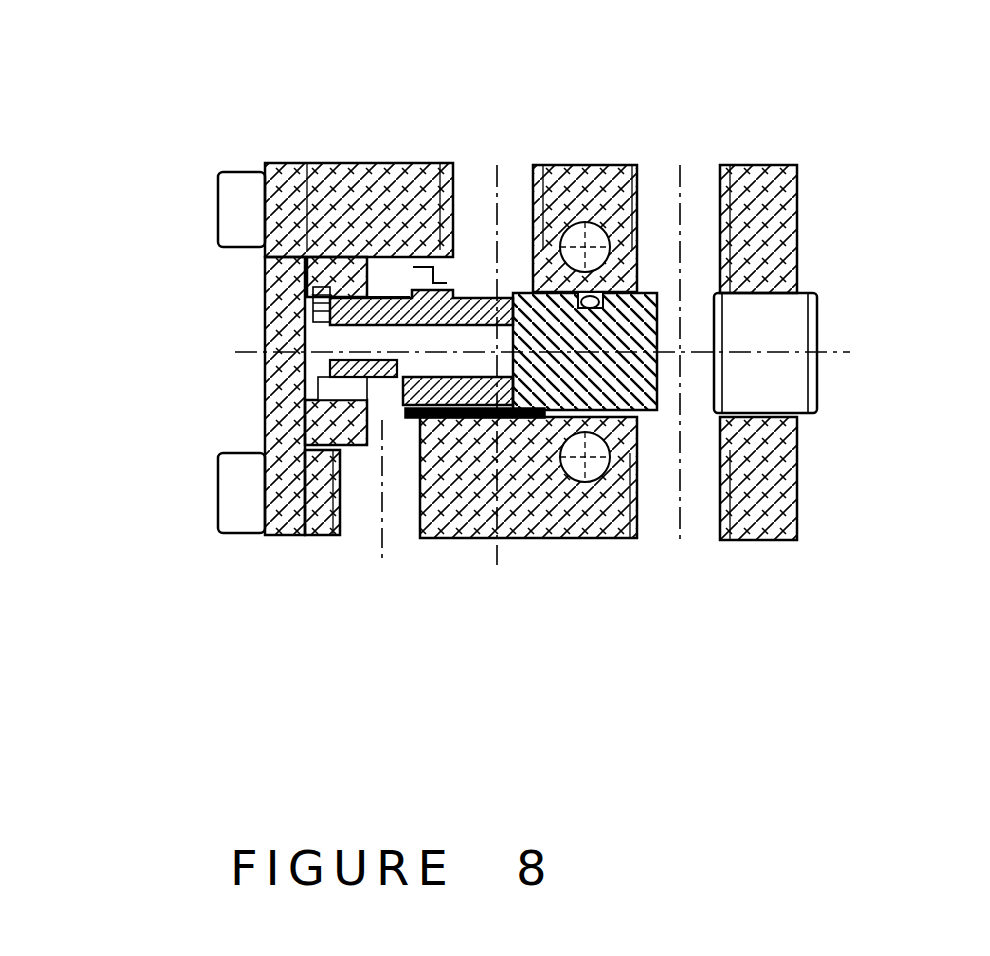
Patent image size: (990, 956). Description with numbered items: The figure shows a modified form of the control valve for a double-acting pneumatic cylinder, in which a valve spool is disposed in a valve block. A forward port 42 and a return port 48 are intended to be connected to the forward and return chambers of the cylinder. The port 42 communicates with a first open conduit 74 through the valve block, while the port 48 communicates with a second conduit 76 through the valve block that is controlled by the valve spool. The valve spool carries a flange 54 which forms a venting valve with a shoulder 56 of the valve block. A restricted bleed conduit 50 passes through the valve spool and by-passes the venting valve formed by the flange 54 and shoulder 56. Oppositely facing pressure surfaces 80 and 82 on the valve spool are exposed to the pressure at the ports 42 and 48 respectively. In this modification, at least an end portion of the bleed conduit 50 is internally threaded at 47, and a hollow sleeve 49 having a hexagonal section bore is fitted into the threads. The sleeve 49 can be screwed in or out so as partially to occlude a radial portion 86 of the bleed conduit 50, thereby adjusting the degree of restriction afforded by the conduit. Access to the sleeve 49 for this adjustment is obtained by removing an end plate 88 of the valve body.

The forward port 42 is at (679, 542).
The internal threads 47 is at (318, 255).
The return port 48 is at (381, 545).
The hollow sleeve 49 is at (322, 325).
The bleed conduit 50 is at (450, 293).
The flange 54 is at (400, 450).
The shoulder 56 is at (445, 435).
The first open conduit 74 is at (681, 160).
The second conduit 76 is at (497, 162).
The pressure surface 80 is at (657, 325).
The pressure surface 82 is at (385, 382).
The radial portion of the bleed conduit 86 is at (338, 430).
The end plate 88 is at (265, 535).